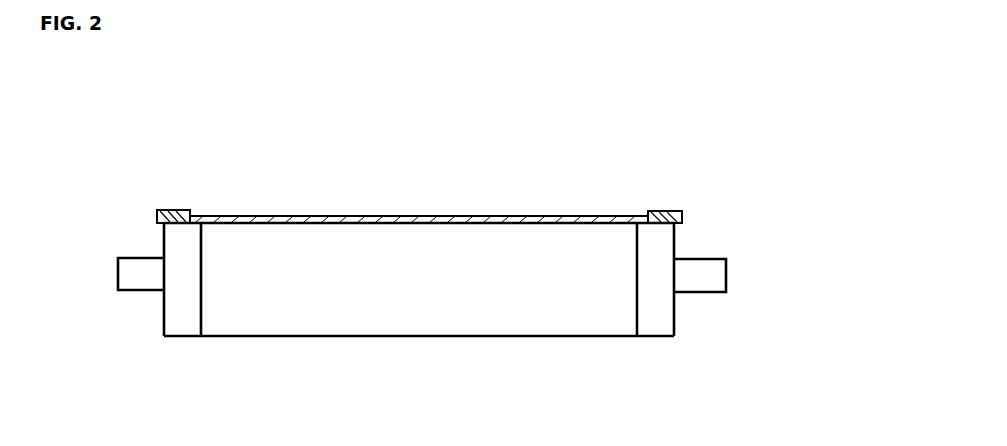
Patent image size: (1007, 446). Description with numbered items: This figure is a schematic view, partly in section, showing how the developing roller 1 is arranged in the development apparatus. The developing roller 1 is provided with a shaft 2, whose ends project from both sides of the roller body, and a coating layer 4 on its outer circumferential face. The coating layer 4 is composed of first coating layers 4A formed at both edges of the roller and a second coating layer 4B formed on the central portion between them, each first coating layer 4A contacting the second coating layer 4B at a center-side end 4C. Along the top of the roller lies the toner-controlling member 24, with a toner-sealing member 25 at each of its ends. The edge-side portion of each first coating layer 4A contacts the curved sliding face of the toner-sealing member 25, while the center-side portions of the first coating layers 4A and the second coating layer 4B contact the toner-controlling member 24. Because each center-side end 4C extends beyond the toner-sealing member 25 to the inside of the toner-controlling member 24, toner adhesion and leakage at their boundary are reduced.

The developing roller 1 is at (705, 180).
The shaft 2 is at (726, 278).
The coating layer 4 is at (474, 368).
The first coating layers 4A is at (183, 323).
The second coating layer 4B is at (403, 318).
The center-side end 4C is at (202, 313).
The toner-controlling member 24 is at (370, 216).
The toner-sealing member 25 is at (177, 210).